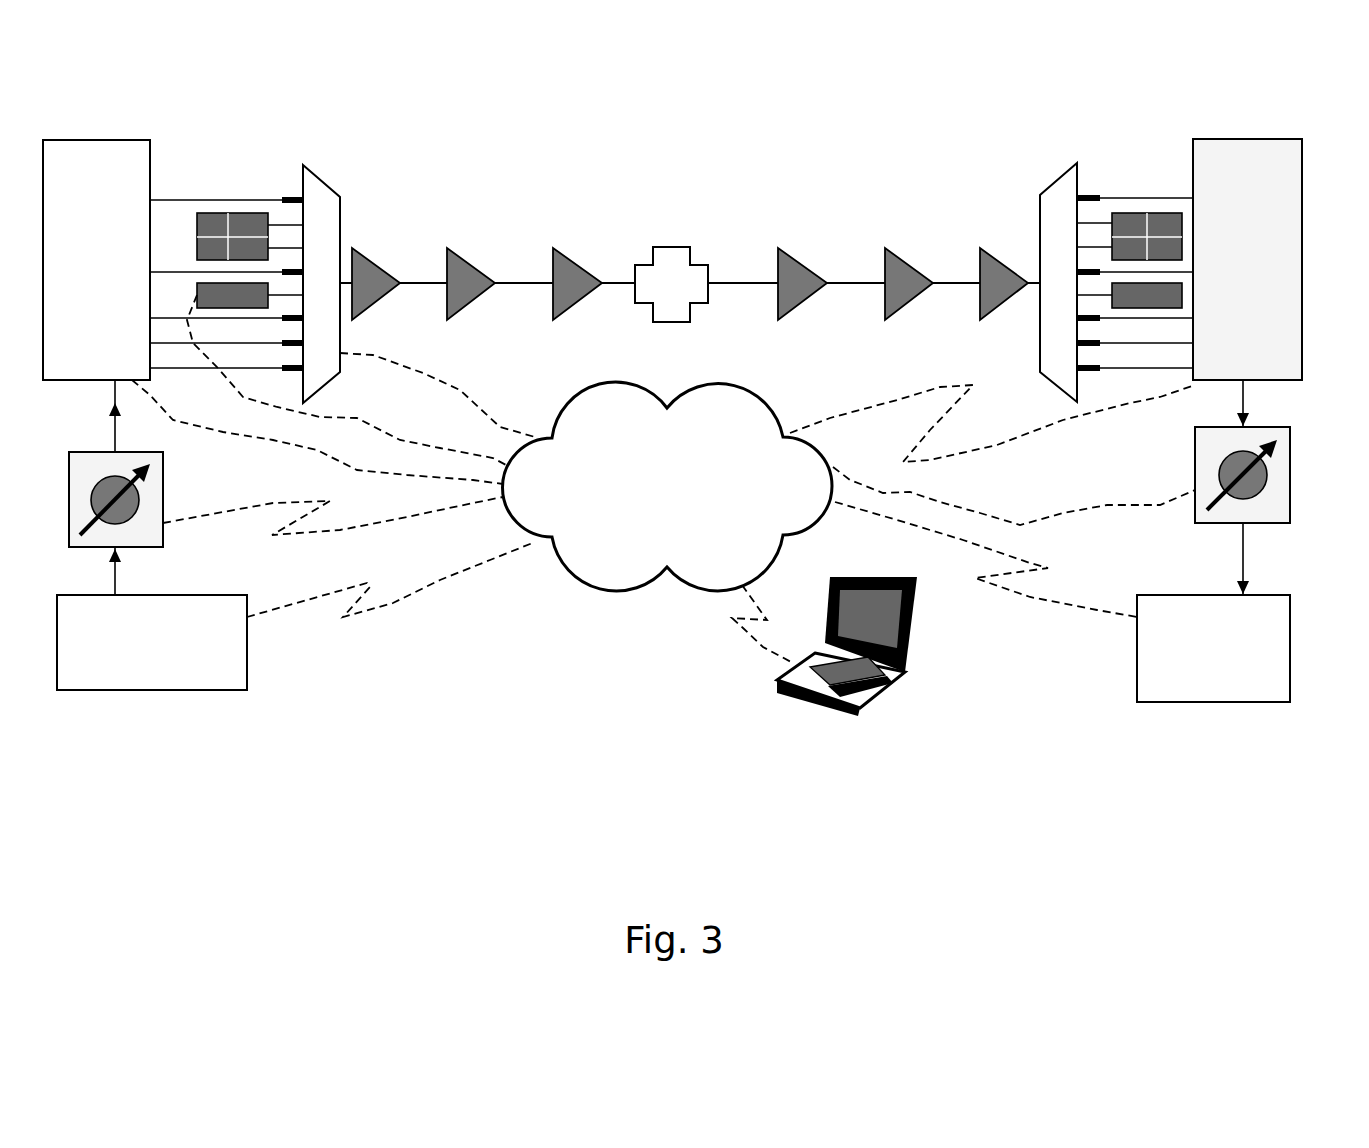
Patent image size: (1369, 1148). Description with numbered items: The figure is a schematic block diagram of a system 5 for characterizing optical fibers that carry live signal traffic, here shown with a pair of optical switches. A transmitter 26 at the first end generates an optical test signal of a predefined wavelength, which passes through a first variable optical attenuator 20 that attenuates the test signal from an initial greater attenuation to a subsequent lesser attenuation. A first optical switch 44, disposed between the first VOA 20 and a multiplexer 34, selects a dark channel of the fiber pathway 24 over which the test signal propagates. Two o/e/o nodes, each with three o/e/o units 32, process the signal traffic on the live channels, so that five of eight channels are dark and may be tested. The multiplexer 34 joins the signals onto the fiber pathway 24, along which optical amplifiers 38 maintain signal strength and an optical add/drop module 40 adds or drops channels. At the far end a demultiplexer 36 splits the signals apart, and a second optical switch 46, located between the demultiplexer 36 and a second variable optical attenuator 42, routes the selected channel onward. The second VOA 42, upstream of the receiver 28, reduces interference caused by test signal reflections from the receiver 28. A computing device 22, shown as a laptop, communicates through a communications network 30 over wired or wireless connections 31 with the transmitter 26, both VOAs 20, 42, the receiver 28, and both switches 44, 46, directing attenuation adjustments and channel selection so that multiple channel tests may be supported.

The system 5 is at (221, 859).
The first variable optical attenuator 20 is at (82, 493).
The computing device 22 is at (903, 667).
The fiber pathway 24 is at (860, 237).
The transmitter 26 is at (183, 672).
The receiver 28 is at (1165, 685).
The communications network 30 is at (703, 452).
The connection 31 is at (738, 628).
The o/e/o units 32 is at (248, 290).
The multiplexer 34 is at (320, 208).
The demultiplexer 36 is at (1057, 207).
The optical amplifiers 38 is at (375, 268).
The optical add/drop module 40 is at (672, 263).
The second variable optical attenuator 42 is at (1277, 470).
The first optical switch 44 is at (108, 167).
The second optical switch 46 is at (1253, 165).